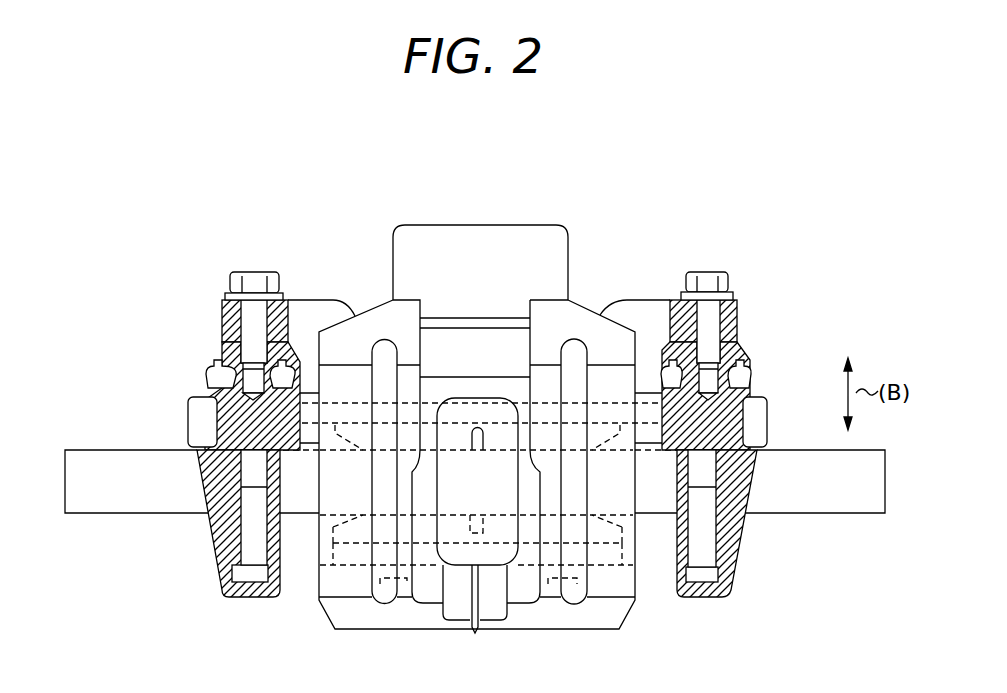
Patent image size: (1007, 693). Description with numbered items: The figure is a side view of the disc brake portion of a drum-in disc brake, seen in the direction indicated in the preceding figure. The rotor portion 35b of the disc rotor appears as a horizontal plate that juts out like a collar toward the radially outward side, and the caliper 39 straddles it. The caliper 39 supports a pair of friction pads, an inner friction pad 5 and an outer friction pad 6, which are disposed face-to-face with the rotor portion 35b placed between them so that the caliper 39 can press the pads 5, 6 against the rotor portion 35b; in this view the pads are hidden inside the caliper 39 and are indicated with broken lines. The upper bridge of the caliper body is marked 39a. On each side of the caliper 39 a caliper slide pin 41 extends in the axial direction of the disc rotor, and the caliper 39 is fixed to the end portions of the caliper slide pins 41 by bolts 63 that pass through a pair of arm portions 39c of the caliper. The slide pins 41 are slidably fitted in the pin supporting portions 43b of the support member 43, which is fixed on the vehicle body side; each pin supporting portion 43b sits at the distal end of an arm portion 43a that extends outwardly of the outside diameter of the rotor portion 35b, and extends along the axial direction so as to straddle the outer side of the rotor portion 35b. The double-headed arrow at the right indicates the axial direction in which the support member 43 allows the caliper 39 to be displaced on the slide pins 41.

The caliper 39 is at (573, 614).
The caliper bridge portion 39a is at (533, 245).
The arm portions 39c is at (313, 309).
The caliper slide pins 41 is at (238, 440).
The support member 43 is at (457, 454).
The arm portions 43a is at (193, 432).
The pin supporting portion 43b is at (215, 525).
The bolts 63 is at (250, 278).
The rotor portion 35b is at (120, 505).
The inner friction pad 5 is at (363, 450).
The outer friction pad 6 is at (360, 525).